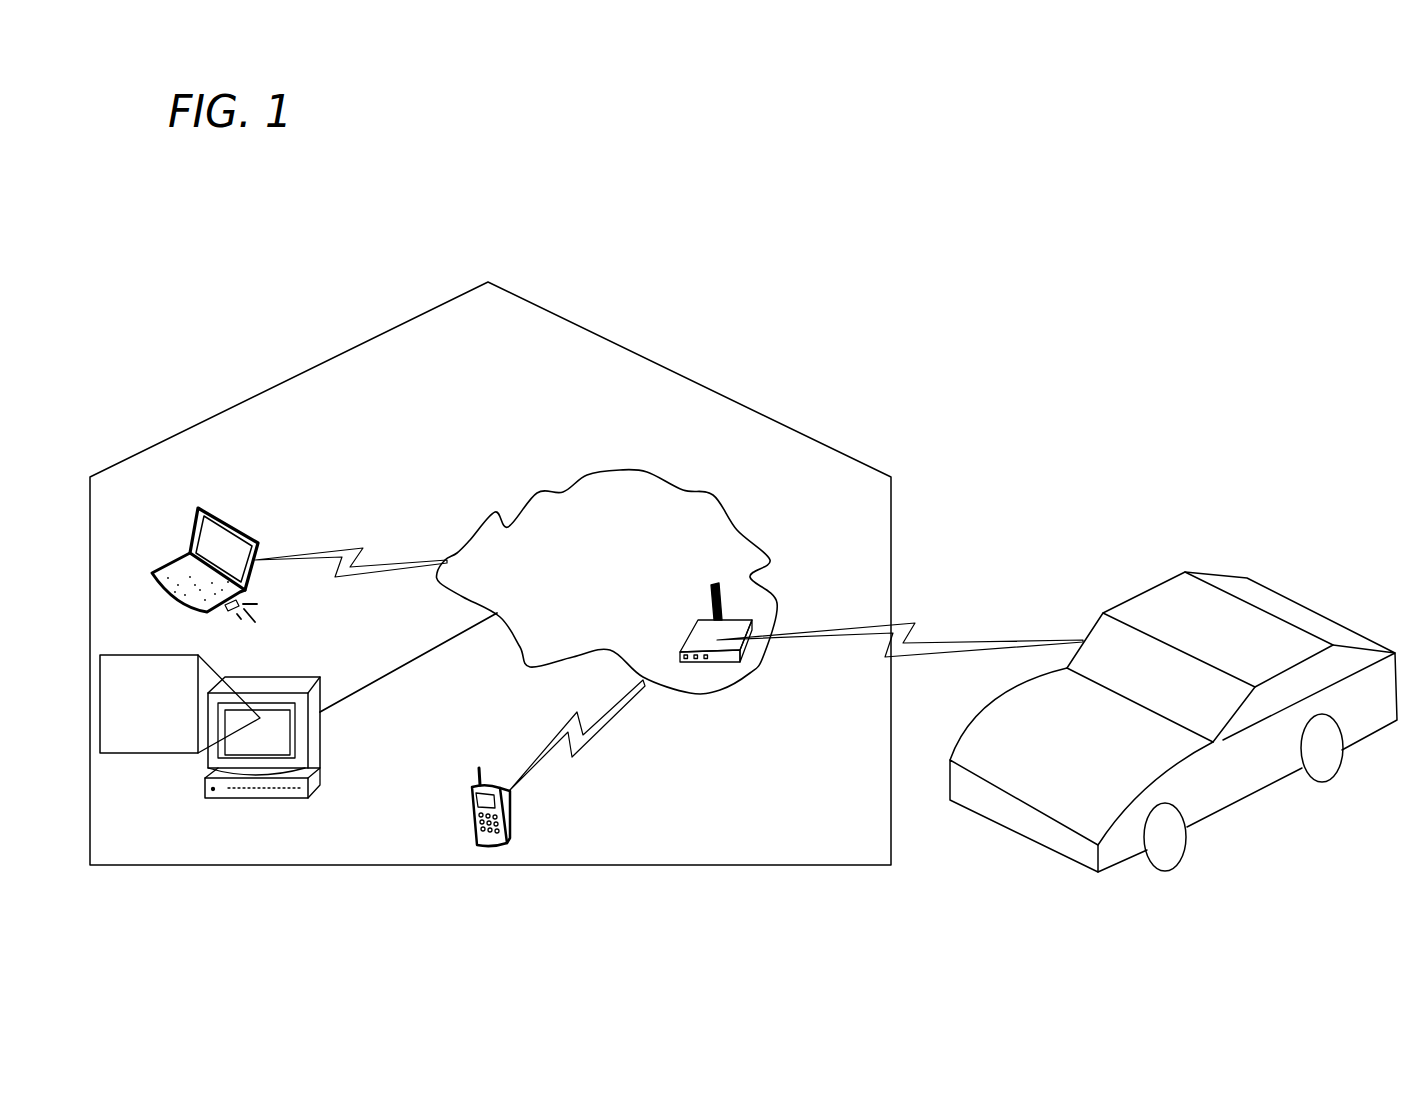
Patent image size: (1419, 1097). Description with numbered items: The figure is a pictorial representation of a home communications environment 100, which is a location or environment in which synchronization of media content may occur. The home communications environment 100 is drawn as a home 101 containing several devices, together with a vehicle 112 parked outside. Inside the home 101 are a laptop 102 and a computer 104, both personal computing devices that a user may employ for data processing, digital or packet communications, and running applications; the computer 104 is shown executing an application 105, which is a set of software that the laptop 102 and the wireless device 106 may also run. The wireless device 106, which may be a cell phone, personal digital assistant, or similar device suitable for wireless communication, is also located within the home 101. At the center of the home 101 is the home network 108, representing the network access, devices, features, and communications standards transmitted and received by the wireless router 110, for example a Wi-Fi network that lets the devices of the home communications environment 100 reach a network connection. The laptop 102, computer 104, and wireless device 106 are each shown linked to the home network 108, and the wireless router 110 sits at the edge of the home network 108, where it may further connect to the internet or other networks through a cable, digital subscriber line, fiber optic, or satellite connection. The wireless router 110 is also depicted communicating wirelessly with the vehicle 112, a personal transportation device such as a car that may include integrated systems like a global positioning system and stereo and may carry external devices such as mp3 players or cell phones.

The home communications environment 100 is at (342, 221).
The home 101 is at (692, 372).
The laptop 102 is at (228, 520).
The computer 104 is at (323, 733).
The application 105 is at (130, 729).
The wireless device 106 is at (512, 813).
The home network 108 is at (588, 611).
The wireless router 110 is at (725, 663).
The vehicle 112 is at (1127, 600).